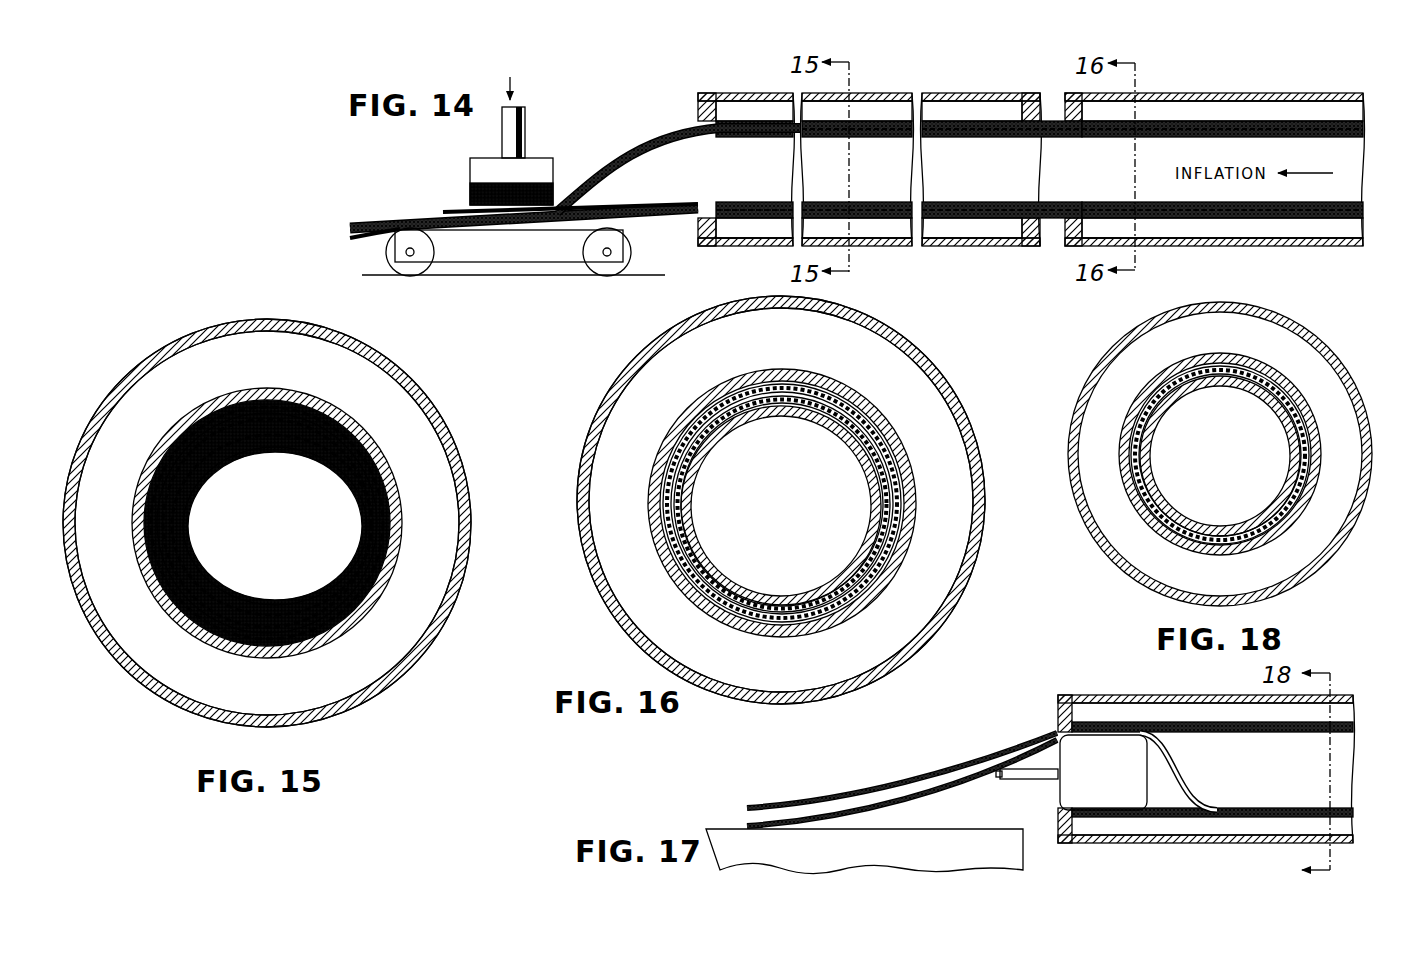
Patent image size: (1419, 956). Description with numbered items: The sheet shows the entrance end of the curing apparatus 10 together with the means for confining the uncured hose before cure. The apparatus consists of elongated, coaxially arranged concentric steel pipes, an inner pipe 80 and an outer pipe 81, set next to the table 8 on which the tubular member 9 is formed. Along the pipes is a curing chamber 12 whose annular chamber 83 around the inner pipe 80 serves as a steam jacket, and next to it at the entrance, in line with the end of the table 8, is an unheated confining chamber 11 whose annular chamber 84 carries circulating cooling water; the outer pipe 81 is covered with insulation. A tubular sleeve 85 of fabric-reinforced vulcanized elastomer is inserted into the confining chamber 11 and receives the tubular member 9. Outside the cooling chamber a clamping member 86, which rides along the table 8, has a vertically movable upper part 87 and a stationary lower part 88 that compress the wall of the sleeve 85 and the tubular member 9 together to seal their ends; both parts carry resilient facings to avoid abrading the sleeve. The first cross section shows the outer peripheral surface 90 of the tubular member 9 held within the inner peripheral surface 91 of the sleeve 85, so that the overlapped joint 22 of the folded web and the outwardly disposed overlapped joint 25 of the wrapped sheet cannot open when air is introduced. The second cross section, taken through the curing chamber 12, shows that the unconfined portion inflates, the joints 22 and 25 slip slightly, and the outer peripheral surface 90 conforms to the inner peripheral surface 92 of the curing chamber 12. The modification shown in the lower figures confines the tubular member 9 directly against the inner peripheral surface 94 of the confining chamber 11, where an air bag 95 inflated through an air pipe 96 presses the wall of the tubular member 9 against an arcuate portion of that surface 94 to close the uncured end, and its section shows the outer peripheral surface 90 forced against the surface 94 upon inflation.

In FIG. 14, the table 8 is at (665, 275).
In FIG. 14, the tubular member 9 is at (395, 222).
In FIG. 15, the tubular member 9 is at (330, 610).
In FIG. 16, the tubular member 9 is at (903, 537).
In FIG. 18, the tubular member 9 is at (1297, 497).
In FIG. 17, the tubular member 9 is at (825, 803).
In FIG. 14, the curing apparatus 10 is at (1023, 93).
In FIG. 14, the confining chamber 11 is at (755, 93).
In FIG. 15, the confining chamber 11 is at (115, 390).
In FIG. 18, the confining chamber 11 is at (1293, 327).
In FIG. 17, the confining chamber 11 is at (1097, 695).
In FIG. 14, the curing chamber 12 is at (1152, 93).
In FIG. 16, the curing chamber 12 is at (947, 385).
In FIG. 15, the overlapped joint 22 is at (270, 455).
In FIG. 16, the overlapped joint 22 is at (780, 415).
In FIG. 15, the overlapped joint 25 is at (288, 403).
In FIG. 16, the overlapped joint 25 is at (800, 377).
In FIG. 14, the inner pipe 80 is at (962, 121).
In FIG. 15, the inner pipe 80 is at (213, 640).
In FIG. 16, the inner pipe 80 is at (895, 577).
In FIG. 14, the outer pipe 81 is at (878, 93).
In FIG. 15, the outer pipe 81 is at (163, 353).
In FIG. 16, the outer pipe 81 is at (915, 343).
In FIG. 14, the annular chamber 83 is at (1232, 105).
In FIG. 16, the annular chamber 83 is at (633, 468).
In FIG. 14, the annular chamber 84 is at (950, 110).
In FIG. 15, the annular chamber 84 is at (122, 498).
In FIG. 14, the tubular sleeve 85 is at (617, 141).
In FIG. 15, the tubular sleeve 85 is at (390, 573).
In FIG. 14, the clamping member 86 is at (527, 150).
In FIG. 14, the upper part 87 is at (470, 175).
In FIG. 14, the lower part 88 is at (520, 250).
In FIG. 15, the outer peripheral surface 90 is at (387, 493).
In FIG. 16, the outer peripheral surface 90 is at (903, 472).
In FIG. 18, the outer peripheral surface 90 is at (1312, 445).
In FIG. 15, the inner peripheral surface 91 is at (147, 532).
In FIG. 16, the inner peripheral surface 92 is at (670, 517).
In FIG. 18, the inner peripheral surface 94 is at (1120, 422).
In FIG. 17, the inner peripheral surface 94 is at (1237, 728).
In FIG. 17, the air bag 95 is at (1070, 788).
In FIG. 17, the air pipe 96 is at (1015, 777).